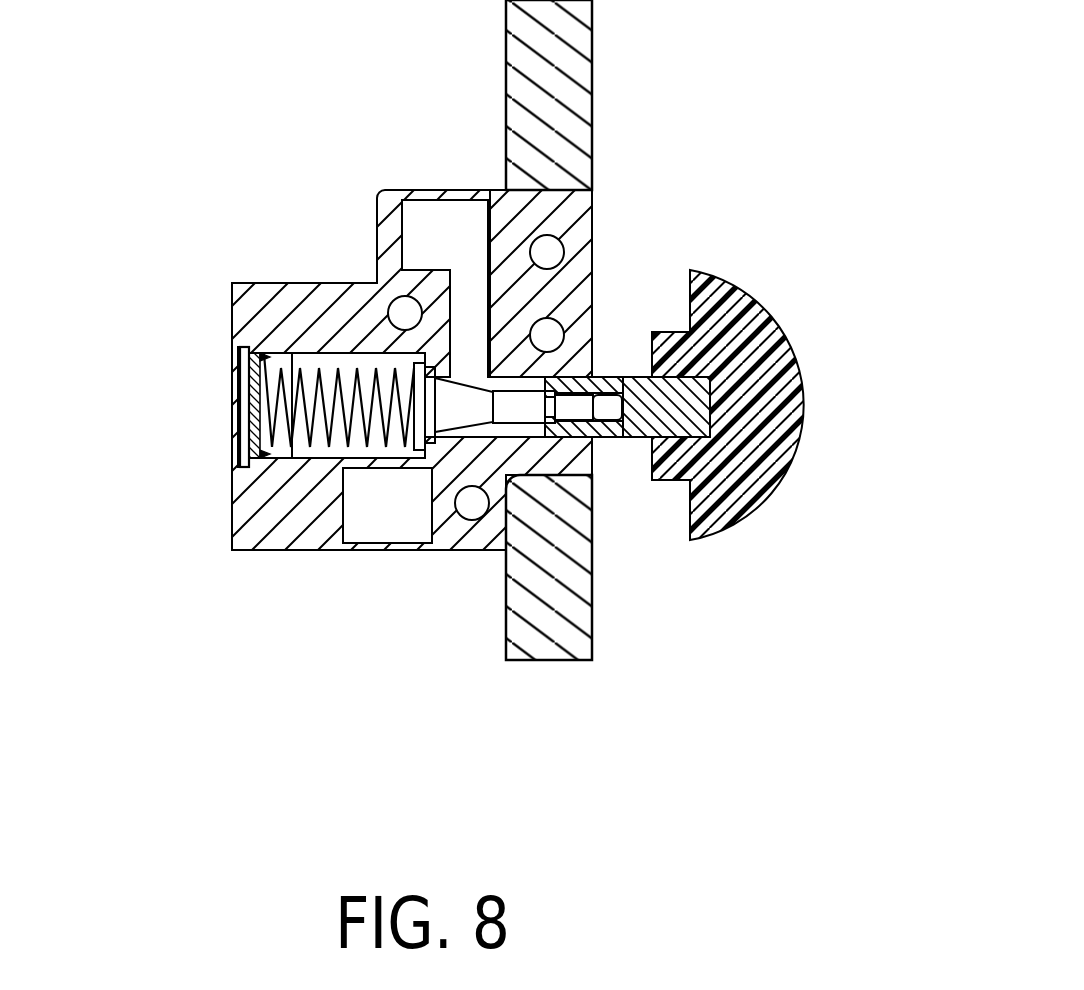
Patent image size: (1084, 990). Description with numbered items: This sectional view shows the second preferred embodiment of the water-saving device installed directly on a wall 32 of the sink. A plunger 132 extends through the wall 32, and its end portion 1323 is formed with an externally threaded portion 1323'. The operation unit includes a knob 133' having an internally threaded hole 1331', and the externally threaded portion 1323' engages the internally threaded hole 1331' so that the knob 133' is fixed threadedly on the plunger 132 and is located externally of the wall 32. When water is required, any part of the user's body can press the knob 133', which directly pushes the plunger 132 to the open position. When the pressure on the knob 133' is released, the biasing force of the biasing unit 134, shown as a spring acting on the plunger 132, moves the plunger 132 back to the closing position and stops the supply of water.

The wall 32 is at (587, 42).
The plunger 132 is at (455, 370).
The biasing unit 134 is at (280, 388).
The end portion 1323 is at (617, 287).
The externally threaded portion 1323' is at (692, 331).
The knob 133' is at (789, 359).
The internally threaded hole 1331' is at (651, 517).